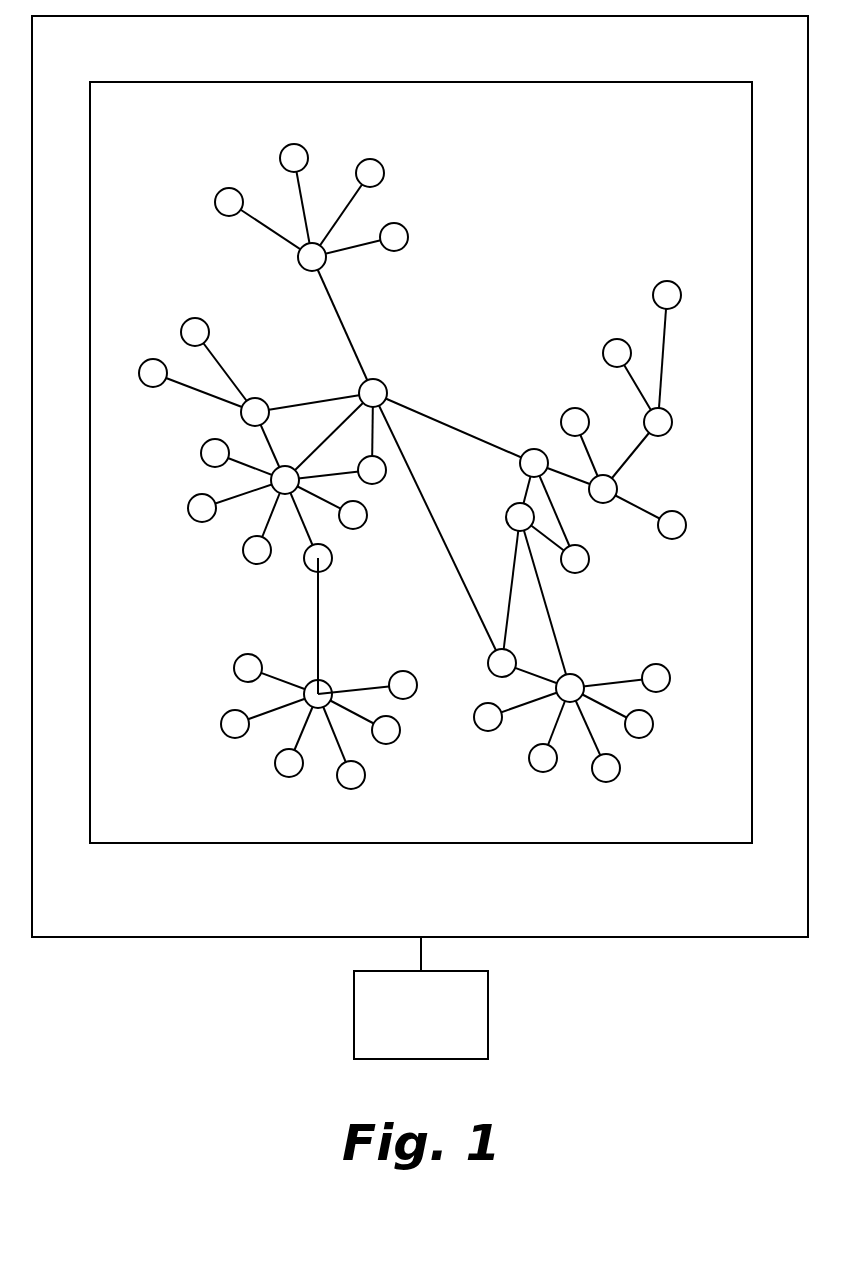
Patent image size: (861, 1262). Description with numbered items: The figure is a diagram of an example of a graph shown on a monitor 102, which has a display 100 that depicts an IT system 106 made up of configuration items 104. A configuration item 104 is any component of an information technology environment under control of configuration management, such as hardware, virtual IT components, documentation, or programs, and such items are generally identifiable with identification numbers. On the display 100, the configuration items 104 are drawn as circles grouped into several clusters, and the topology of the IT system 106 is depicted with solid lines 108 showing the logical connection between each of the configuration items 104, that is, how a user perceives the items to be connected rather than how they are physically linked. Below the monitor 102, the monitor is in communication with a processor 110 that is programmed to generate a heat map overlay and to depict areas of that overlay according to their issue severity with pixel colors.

The display 100 is at (696, 120).
The monitor 102 is at (696, 59).
The configuration item 104 is at (387, 394).
The IT system 106 is at (176, 283).
The solid lines 108 is at (387, 687).
The processor 110 is at (357, 1015).